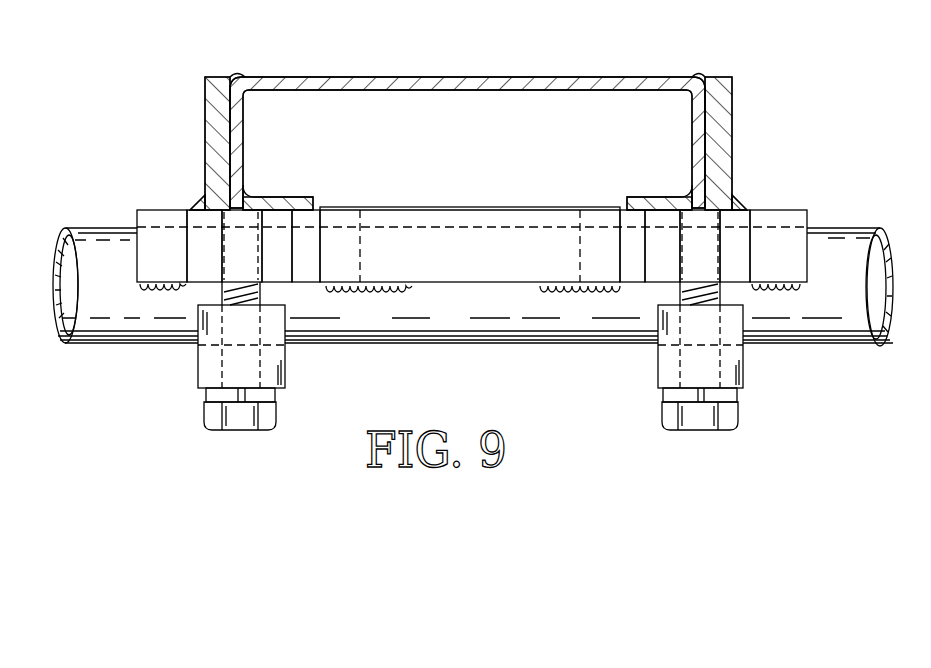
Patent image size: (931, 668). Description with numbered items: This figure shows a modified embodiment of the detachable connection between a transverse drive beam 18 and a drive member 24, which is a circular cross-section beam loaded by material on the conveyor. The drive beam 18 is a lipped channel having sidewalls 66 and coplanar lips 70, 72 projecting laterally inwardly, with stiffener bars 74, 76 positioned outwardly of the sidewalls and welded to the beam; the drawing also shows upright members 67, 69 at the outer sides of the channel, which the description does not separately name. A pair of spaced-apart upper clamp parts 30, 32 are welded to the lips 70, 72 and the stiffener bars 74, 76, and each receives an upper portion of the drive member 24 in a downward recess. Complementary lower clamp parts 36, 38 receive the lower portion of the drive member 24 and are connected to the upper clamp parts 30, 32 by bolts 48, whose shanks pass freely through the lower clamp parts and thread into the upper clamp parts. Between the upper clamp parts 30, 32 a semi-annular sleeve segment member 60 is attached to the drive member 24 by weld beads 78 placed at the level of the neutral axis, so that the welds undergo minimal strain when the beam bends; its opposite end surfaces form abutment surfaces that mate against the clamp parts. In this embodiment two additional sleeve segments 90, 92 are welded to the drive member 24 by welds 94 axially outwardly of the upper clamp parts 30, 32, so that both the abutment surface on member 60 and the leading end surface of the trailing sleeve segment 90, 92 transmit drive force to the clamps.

The transverse drive beam 18 is at (469, 108).
The drive member 24 is at (468, 298).
The upper clamp part 30 is at (205, 268).
The upper clamp part 32 is at (665, 272).
The lower clamp part 36 is at (205, 378).
The lower clamp part 38 is at (740, 360).
The bolt 48 is at (248, 420).
The sleeve segment member 60 is at (503, 215).
The sidewall 66 is at (243, 142).
The side post 67 is at (205, 130).
The side post 69 is at (722, 118).
The lip 70 is at (290, 197).
The lip 72 is at (640, 197).
The stiffener bar 74 is at (313, 248).
The stiffener bar 76 is at (630, 238).
The weld bead 78 is at (372, 298).
The additional sleeve segment 90 is at (147, 262).
The additional sleeve segment 92 is at (800, 252).
The weld 94 is at (150, 298).